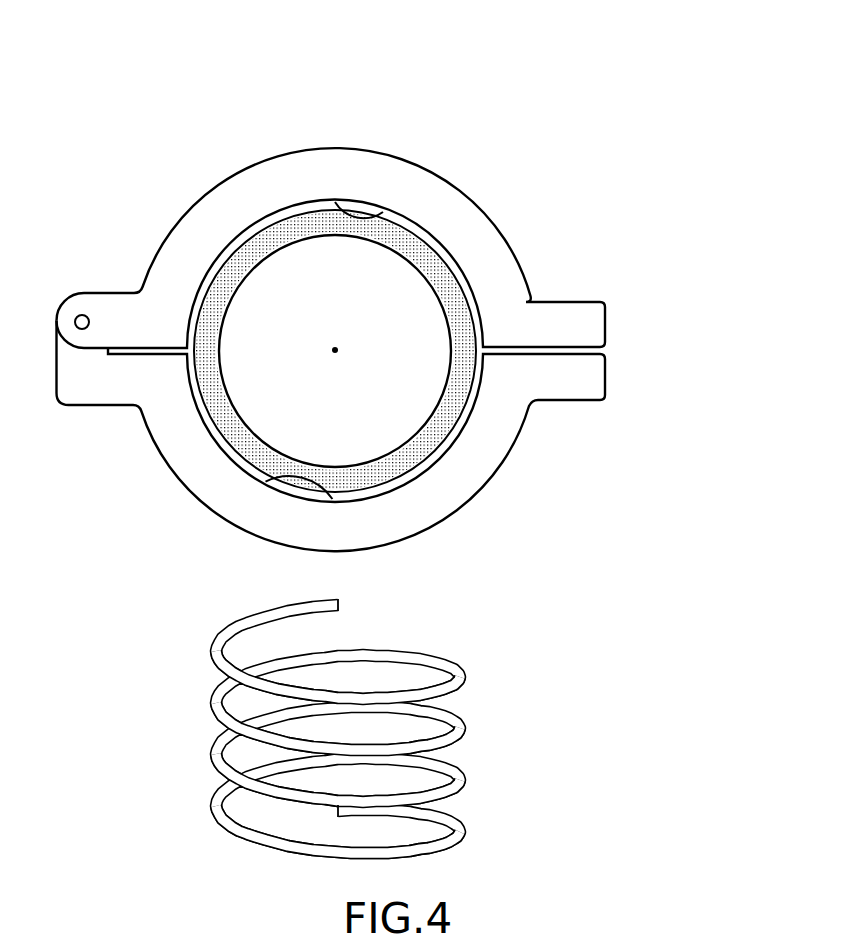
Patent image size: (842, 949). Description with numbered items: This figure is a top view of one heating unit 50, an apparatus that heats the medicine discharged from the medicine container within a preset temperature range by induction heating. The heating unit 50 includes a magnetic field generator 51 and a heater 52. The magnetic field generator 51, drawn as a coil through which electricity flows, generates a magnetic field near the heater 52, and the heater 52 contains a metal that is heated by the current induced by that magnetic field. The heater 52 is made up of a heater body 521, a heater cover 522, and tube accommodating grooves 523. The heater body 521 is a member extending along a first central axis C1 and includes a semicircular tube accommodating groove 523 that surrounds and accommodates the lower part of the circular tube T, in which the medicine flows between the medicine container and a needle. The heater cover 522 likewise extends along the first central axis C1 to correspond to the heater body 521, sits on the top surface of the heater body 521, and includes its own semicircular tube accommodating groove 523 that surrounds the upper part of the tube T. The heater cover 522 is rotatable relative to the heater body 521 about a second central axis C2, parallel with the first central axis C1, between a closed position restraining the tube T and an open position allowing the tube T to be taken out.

The heating unit 50 is at (400, 435).
The magnetic field generator 51 is at (492, 682).
The heater 52 is at (400, 314).
The heater body 521 is at (520, 442).
The heater cover 522 is at (520, 270).
The tube accommodating groove 523 is at (385, 207).
The tube T is at (423, 257).
The first central axis C1 is at (335, 350).
The second central axis C2 is at (82, 316).